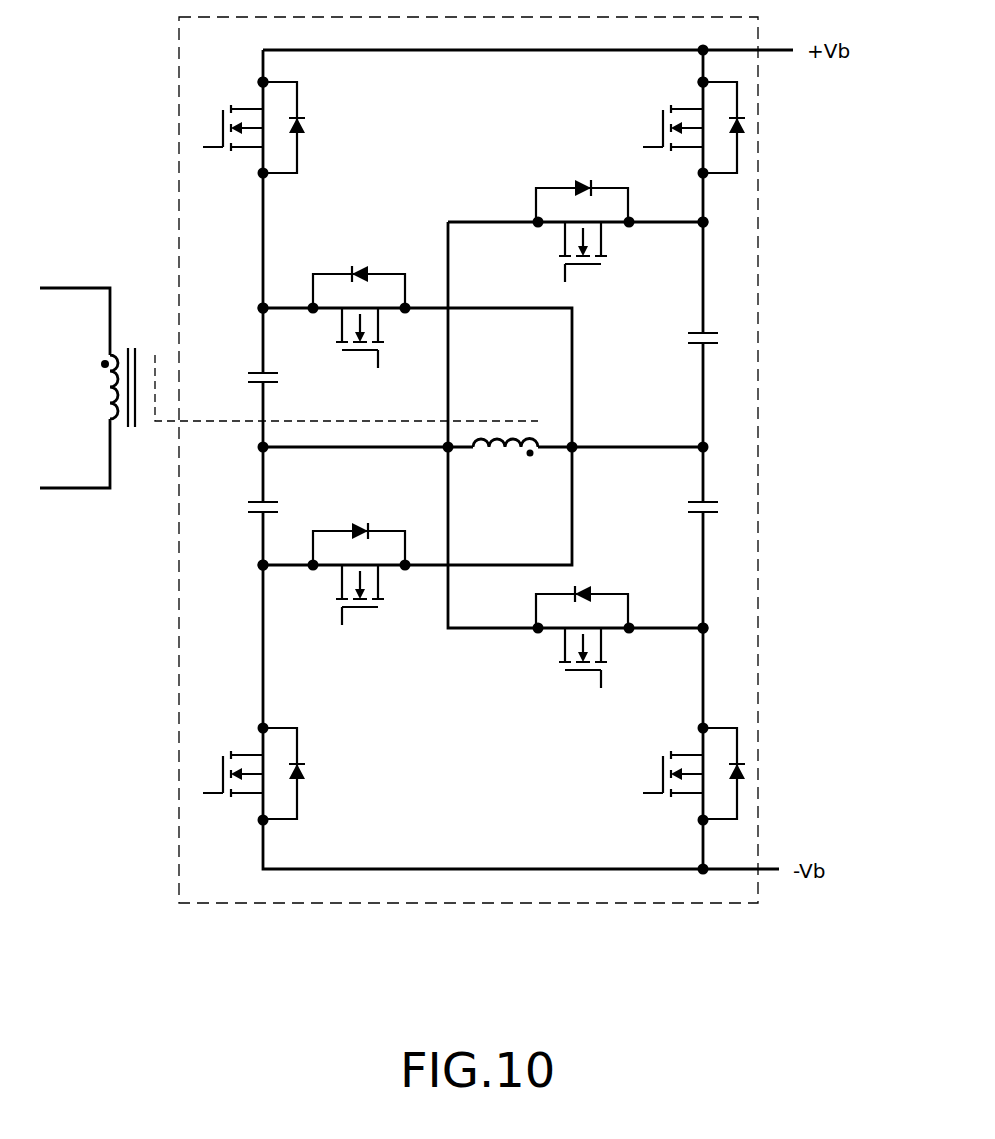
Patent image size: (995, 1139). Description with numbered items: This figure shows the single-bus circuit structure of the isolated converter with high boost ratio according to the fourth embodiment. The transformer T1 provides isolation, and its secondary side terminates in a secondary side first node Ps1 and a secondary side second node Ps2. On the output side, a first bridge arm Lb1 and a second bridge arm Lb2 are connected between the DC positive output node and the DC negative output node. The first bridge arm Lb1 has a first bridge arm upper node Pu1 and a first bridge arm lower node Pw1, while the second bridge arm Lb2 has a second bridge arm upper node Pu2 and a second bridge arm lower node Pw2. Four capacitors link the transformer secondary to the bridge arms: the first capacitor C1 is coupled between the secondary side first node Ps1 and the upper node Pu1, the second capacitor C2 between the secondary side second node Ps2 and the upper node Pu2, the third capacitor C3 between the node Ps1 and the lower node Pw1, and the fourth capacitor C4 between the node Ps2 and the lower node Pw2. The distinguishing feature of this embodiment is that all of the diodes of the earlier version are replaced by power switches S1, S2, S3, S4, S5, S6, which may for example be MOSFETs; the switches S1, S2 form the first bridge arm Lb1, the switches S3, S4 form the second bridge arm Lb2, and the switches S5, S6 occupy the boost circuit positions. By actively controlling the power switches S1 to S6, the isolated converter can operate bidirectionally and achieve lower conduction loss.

The first bridge arm Lb1 is at (263, 65).
The second bridge arm Lb2 is at (703, 60).
The first bridge arm upper node Pu1 is at (263, 308).
The second bridge arm upper node Pu2 is at (703, 222).
The first bridge arm lower node Pw1 is at (263, 565).
The second bridge arm lower node Pw2 is at (703, 628).
The secondary side first node Ps1 is at (448, 447).
The secondary side second node Ps2 is at (572, 447).
The power switch S1 is at (247, 127).
The power switch S2 is at (247, 770).
The power switch S3 is at (689, 127).
The power switch S4 is at (689, 770).
The power switch S5 is at (352, 448).
The power switch S6 is at (591, 435).
The first capacitor C1 is at (246, 364).
The second capacitor C2 is at (718, 324).
The third capacitor C3 is at (247, 492).
The fourth capacitor C4 is at (718, 493).
The transformer T1 is at (283, 388).